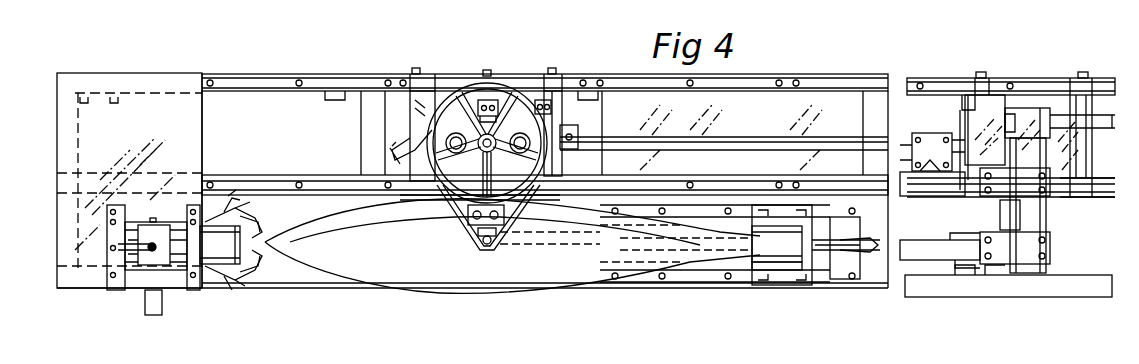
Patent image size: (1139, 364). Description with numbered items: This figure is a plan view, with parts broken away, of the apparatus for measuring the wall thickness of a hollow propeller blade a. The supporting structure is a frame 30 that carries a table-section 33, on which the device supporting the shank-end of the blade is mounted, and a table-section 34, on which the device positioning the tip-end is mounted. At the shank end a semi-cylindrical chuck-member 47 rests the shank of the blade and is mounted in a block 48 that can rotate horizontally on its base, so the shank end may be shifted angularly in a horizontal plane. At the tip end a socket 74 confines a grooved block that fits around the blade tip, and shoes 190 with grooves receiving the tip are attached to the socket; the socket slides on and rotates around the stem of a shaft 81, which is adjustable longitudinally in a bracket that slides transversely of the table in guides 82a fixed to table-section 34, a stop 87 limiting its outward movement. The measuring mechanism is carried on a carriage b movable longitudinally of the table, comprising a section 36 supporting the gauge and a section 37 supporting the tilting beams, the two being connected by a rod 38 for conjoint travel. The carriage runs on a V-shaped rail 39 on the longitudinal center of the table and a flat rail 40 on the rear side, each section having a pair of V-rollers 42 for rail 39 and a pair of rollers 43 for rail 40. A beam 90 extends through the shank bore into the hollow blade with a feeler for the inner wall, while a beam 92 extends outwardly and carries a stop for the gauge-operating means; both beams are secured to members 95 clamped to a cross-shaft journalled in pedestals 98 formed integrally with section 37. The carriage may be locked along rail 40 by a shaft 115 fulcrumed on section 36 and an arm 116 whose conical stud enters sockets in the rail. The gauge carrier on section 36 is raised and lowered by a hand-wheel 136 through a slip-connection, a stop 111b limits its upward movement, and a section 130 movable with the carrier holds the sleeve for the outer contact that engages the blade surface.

The frame 30 is at (290, 283).
The table-section 33 is at (842, 262).
The table-section 34 is at (82, 270).
The carriage section 36 is at (560, 124).
The carriage section 37 is at (1010, 105).
The rod 38 is at (755, 147).
The V-shaped rail 39 is at (318, 180).
The flat rail 40 is at (340, 78).
The V-rollers 42 is at (423, 200).
The rollers 43 is at (425, 76).
The chuck-member 47 is at (778, 262).
The block 48 is at (796, 274).
The socket 74 is at (226, 262).
The shaft 81 is at (186, 270).
The guides 82a is at (116, 276).
The stop 87 is at (148, 300).
The beam 90 is at (926, 246).
The beam 92 is at (905, 190).
The members 95 is at (1010, 240).
The pedestals 98 is at (1030, 208).
The stop 111b is at (482, 100).
The shaft 115 is at (512, 84).
The arm 116 is at (488, 70).
The section 130 is at (456, 218).
The hand-wheel 136 is at (546, 76).
The shoes 190 is at (255, 250).
The propeller blade a is at (456, 270).
The carriage b is at (420, 113).